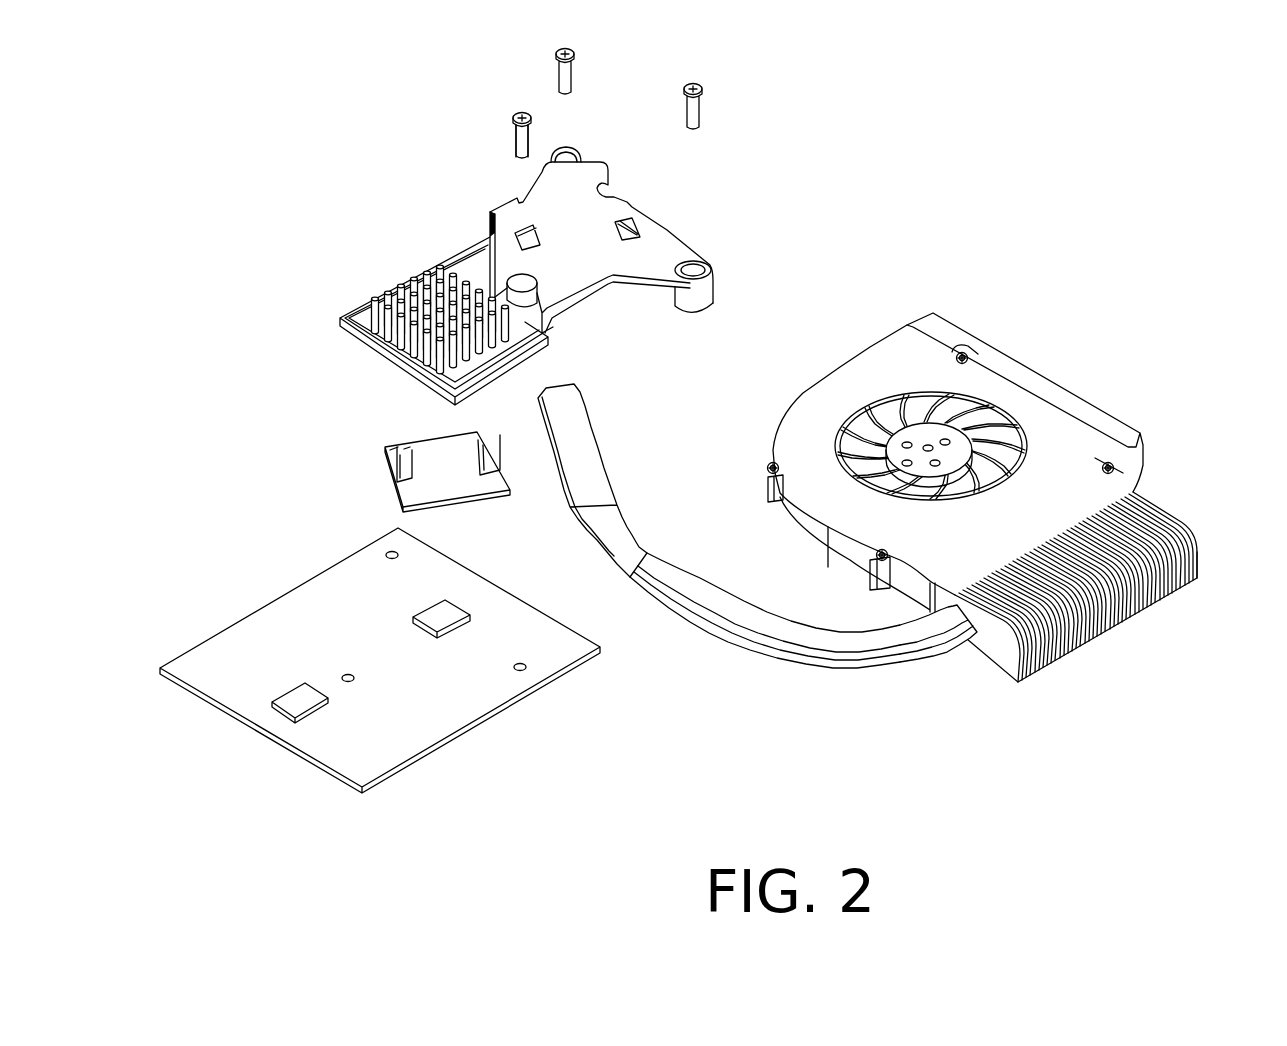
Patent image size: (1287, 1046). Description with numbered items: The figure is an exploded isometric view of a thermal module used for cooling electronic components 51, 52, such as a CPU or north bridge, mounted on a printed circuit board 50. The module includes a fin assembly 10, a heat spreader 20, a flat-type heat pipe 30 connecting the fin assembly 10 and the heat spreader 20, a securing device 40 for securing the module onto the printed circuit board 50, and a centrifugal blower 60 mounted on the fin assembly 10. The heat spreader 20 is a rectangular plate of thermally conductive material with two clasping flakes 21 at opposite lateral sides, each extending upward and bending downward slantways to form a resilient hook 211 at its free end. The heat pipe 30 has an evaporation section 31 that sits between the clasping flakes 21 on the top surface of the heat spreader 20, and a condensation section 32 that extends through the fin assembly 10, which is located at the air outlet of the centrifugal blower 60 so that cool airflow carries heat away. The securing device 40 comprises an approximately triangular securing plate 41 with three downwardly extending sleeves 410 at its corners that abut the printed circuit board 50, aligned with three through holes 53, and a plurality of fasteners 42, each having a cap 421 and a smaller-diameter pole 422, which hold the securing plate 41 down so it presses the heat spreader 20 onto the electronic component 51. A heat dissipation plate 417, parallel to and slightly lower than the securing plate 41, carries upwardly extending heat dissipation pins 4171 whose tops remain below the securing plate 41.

The fin assembly 10 is at (1163, 505).
The heat spreader 20 is at (410, 447).
The clasping flakes 21 is at (407, 483).
The hook 211 is at (360, 437).
The flat-type heat pipe 30 is at (757, 566).
The evaporation section 31 is at (580, 443).
The condensation section 32 is at (938, 625).
The securing device 40 is at (561, 227).
The securing plate 41 is at (651, 240).
The sleeves 410 is at (698, 303).
The heat dissipation plate 417 is at (401, 295).
The heat dissipation pins 4171 is at (472, 267).
The fasteners 42 is at (611, 104).
The cap 421 is at (517, 112).
The pole 422 is at (520, 143).
The printed circuit board 50 is at (371, 654).
The electronic component 51 is at (430, 617).
The electronic component 52 is at (295, 700).
The through holes 53 is at (522, 670).
The centrifugal blower 60 is at (1058, 432).